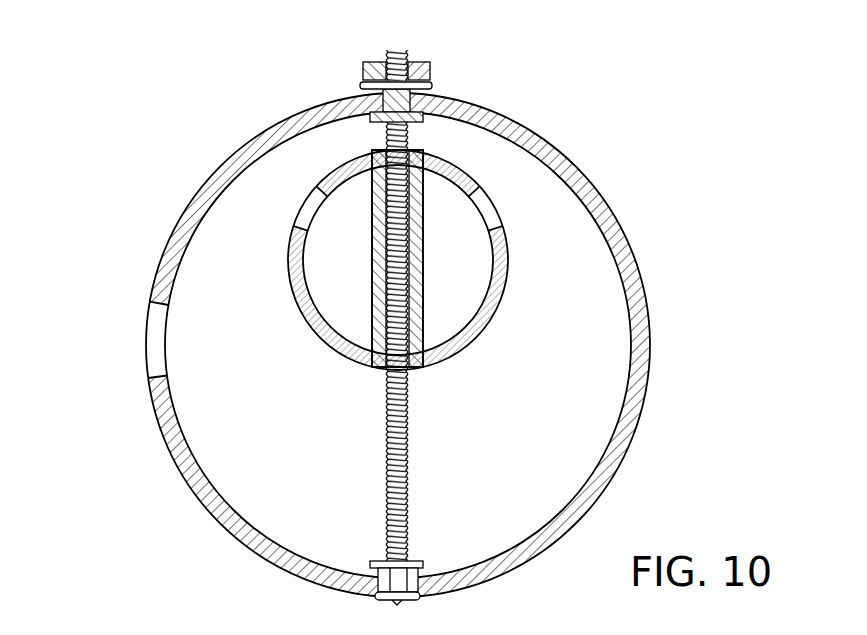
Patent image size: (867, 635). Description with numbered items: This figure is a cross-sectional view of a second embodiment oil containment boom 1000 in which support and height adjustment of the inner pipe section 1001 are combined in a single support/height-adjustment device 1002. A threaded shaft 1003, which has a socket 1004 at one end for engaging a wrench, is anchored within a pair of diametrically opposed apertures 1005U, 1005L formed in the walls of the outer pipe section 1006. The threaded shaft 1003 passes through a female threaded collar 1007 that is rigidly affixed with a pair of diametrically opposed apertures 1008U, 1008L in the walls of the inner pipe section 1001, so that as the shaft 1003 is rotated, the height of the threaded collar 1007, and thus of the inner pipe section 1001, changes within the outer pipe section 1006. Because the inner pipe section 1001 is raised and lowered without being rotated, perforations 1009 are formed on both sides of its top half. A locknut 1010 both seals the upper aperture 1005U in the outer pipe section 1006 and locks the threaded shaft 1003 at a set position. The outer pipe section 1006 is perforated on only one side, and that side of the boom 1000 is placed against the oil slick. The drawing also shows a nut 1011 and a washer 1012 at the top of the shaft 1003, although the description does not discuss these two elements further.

The oil containment boom 1000 is at (562, 111).
The inner pipe section 1001 is at (347, 170).
The support/height-adjustment device 1002 is at (448, 383).
The threaded shaft 1003 is at (410, 450).
The socket 1004 is at (386, 57).
The upper aperture 1005U is at (377, 103).
The lower aperture 1005L is at (376, 583).
The outer pipe section 1006 is at (640, 365).
The female threaded collar 1007 is at (420, 243).
The upper aperture 1008U is at (433, 162).
The lower aperture 1008L is at (433, 352).
The perforations 1009 is at (157, 305).
The locknut 1010 is at (313, 196).
The nut 1011 is at (430, 66).
The washer 1012 is at (433, 88).